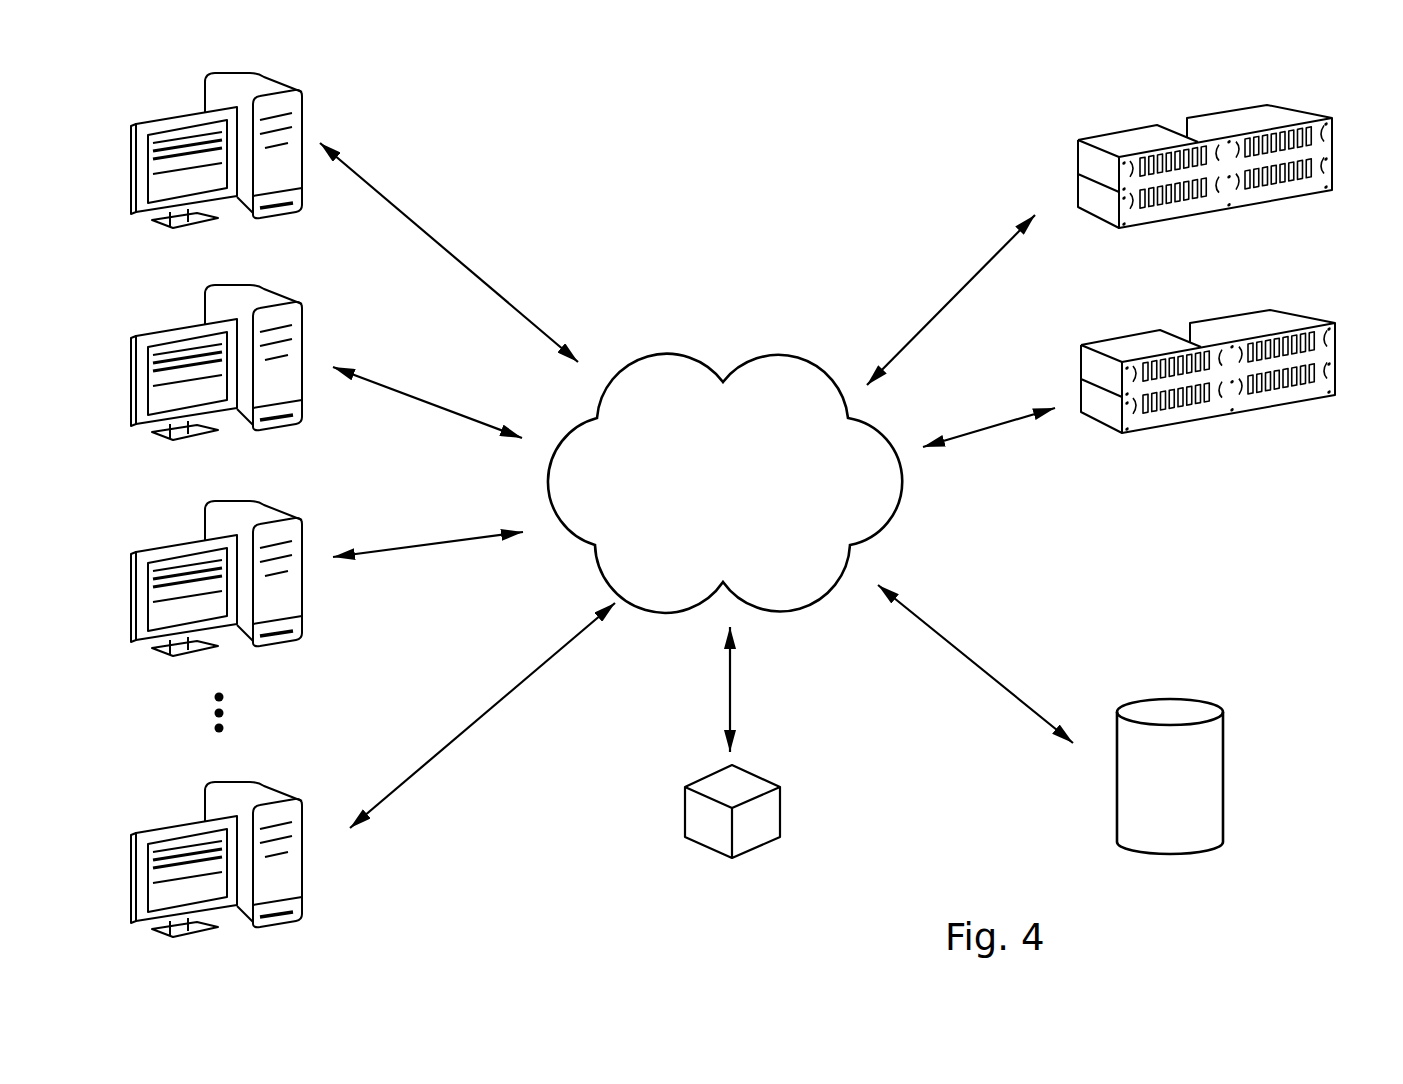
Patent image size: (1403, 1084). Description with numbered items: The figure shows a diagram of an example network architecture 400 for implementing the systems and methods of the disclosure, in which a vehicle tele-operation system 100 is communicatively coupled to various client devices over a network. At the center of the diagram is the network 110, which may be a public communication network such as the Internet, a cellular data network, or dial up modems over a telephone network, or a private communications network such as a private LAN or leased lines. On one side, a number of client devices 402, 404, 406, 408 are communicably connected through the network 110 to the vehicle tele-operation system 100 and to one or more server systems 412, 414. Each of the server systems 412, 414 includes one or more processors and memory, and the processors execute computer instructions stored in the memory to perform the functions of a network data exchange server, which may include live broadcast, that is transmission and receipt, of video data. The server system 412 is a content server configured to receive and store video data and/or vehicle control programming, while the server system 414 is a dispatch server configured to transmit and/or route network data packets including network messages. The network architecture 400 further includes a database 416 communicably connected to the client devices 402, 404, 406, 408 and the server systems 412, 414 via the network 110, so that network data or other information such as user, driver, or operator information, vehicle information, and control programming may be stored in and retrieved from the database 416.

The network architecture 400 is at (714, 158).
The client device 402 is at (292, 90).
The client device 404 is at (292, 302).
The client device 406 is at (292, 518).
The client device 408 is at (292, 799).
The network 110 is at (725, 483).
The server system 412 is at (1258, 108).
The server system 414 is at (1262, 315).
The database 416 is at (1178, 707).
The vehicle tele-operation system 100 is at (698, 830).